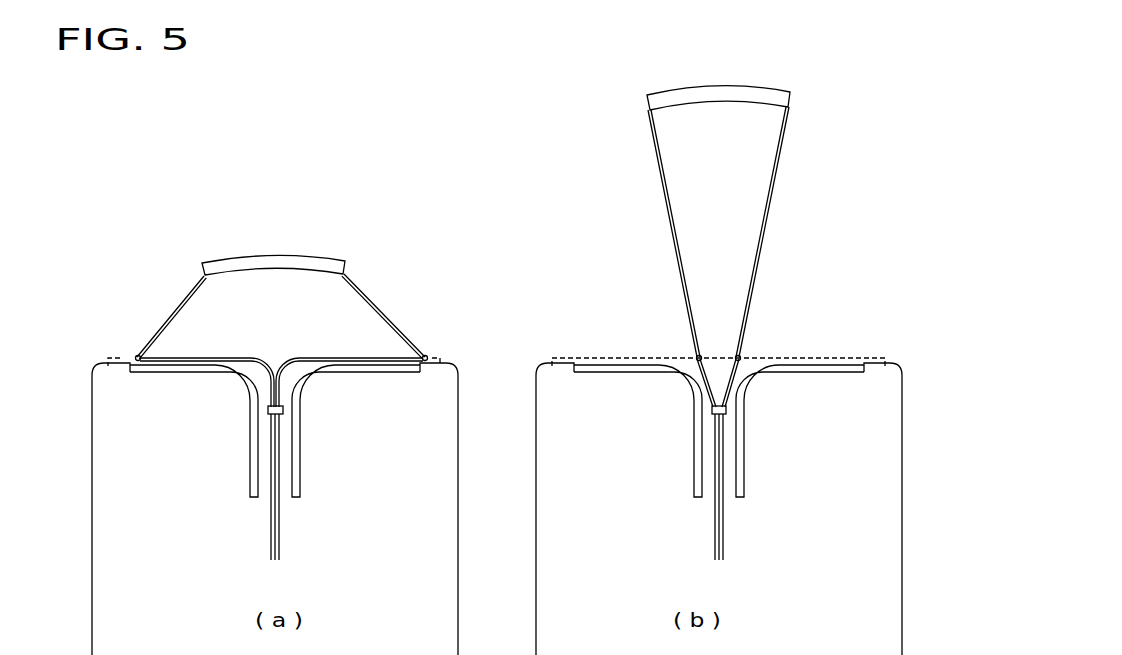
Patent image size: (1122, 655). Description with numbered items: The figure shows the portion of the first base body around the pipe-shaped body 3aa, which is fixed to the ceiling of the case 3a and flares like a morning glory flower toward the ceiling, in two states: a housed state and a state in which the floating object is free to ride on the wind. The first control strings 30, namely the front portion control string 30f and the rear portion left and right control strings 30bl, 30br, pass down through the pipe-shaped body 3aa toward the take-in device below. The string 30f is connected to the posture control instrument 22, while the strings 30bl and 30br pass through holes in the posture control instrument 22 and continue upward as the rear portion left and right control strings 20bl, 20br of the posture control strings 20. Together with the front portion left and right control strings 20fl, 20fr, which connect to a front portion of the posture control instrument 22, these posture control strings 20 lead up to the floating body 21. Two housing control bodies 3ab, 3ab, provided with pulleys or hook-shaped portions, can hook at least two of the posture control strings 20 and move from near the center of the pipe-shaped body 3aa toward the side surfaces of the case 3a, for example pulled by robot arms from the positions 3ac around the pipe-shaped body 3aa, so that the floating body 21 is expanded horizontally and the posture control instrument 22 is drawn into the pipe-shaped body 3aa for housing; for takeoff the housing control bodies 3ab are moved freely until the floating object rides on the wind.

In FIG. 5A, the case 3a is at (458, 435).
In FIG. 5B, the case 3a is at (902, 440).
In FIG. 5A, the pipe-shaped body 3aa is at (212, 373).
In FIG. 5B, the pipe-shaped body 3aa is at (653, 373).
In FIG. 5A, the housing control body 3ab is at (141, 357).
In FIG. 5B, the housing control body 3ab is at (699, 355).
In FIG. 5A, the positions around the pipe-shaped body 3ac is at (108, 366).
In FIG. 5B, the positions around the pipe-shaped body 3ac is at (552, 366).
In FIG. 5A, the posture control strings 20 is at (281, 340).
In FIG. 5B, the posture control strings 20 is at (719, 257).
In FIG. 5A, the front portion left control string 20fl is at (197, 288).
In FIG. 5B, the front portion left control string 20fl is at (693, 134).
In FIG. 5A, the front portion right control string 20fr is at (358, 289).
In FIG. 5B, the front portion right control string 20fr is at (782, 136).
In FIG. 5A, the rear portion left control string 20bl is at (185, 300).
In FIG. 5B, the rear portion left control string 20bl is at (658, 164).
In FIG. 5A, the rear portion right control string 20br is at (367, 300).
In FIG. 5B, the rear portion right control string 20br is at (777, 165).
In FIG. 5A, the floating body 21 is at (338, 258).
In FIG. 5B, the floating body 21 is at (789, 93).
In FIG. 5A, the posture control instrument 22 is at (283, 411).
In FIG. 5B, the posture control instrument 22 is at (726, 411).
In FIG. 5A, the first control strings 30 is at (357, 502).
In FIG. 5B, the first control strings 30 is at (801, 497).
In FIG. 5A, the rear portion right control string 30br is at (279, 524).
In FIG. 5B, the rear portion right control string 30br is at (723, 519).
In FIG. 5A, the front portion control string 30f is at (277, 541).
In FIG. 5B, the front portion control string 30f is at (721, 536).
In FIG. 5A, the rear portion left control string 30bl is at (272, 558).
In FIG. 5B, the rear portion left control string 30bl is at (717, 552).